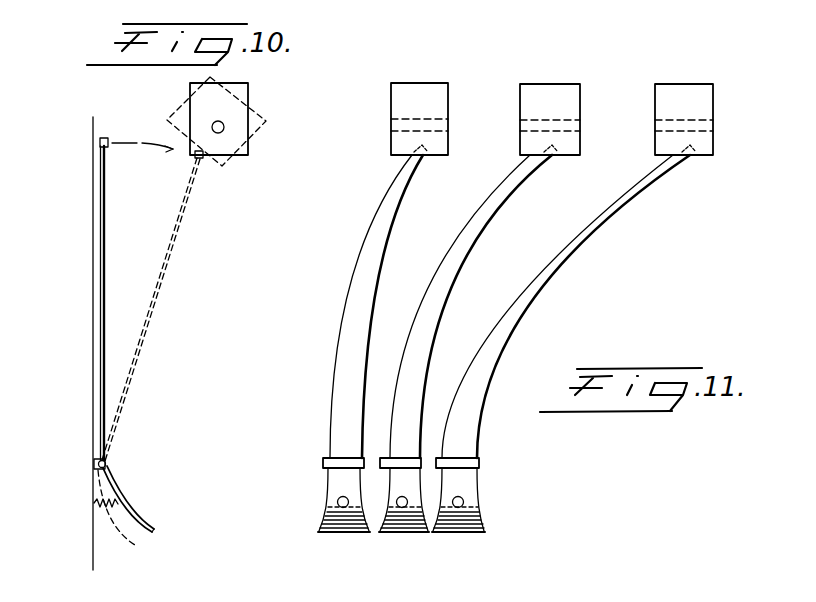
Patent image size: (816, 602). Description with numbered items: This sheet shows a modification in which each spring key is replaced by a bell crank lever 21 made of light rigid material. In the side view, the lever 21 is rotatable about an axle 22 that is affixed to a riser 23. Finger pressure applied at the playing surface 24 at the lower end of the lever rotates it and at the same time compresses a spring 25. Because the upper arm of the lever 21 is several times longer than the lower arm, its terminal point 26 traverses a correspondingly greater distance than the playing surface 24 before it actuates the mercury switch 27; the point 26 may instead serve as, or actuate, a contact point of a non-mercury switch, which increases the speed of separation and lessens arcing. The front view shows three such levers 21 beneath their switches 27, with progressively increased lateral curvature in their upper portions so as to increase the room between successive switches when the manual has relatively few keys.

In FIG. 10, the bell crank lever 21 is at (172, 237).
In FIG. 11, the bell crank lever 21 is at (427, 283).
In FIG. 10, the axle 22 is at (106, 465).
In FIG. 11, the axle 22 is at (322, 466).
In FIG. 10, the riser 23 is at (92, 290).
In FIG. 10, the playing surface 24 is at (137, 520).
In FIG. 11, the playing surface 24 is at (360, 533).
In FIG. 10, the spring 25 is at (106, 503).
In FIG. 11, the spring 25 is at (395, 500).
In FIG. 10, the terminal point 26 is at (106, 140).
In FIG. 11, the terminal point 26 is at (426, 152).
In FIG. 10, the mercury switch 27 is at (250, 96).
In FIG. 11, the mercury switch 27 is at (522, 91).